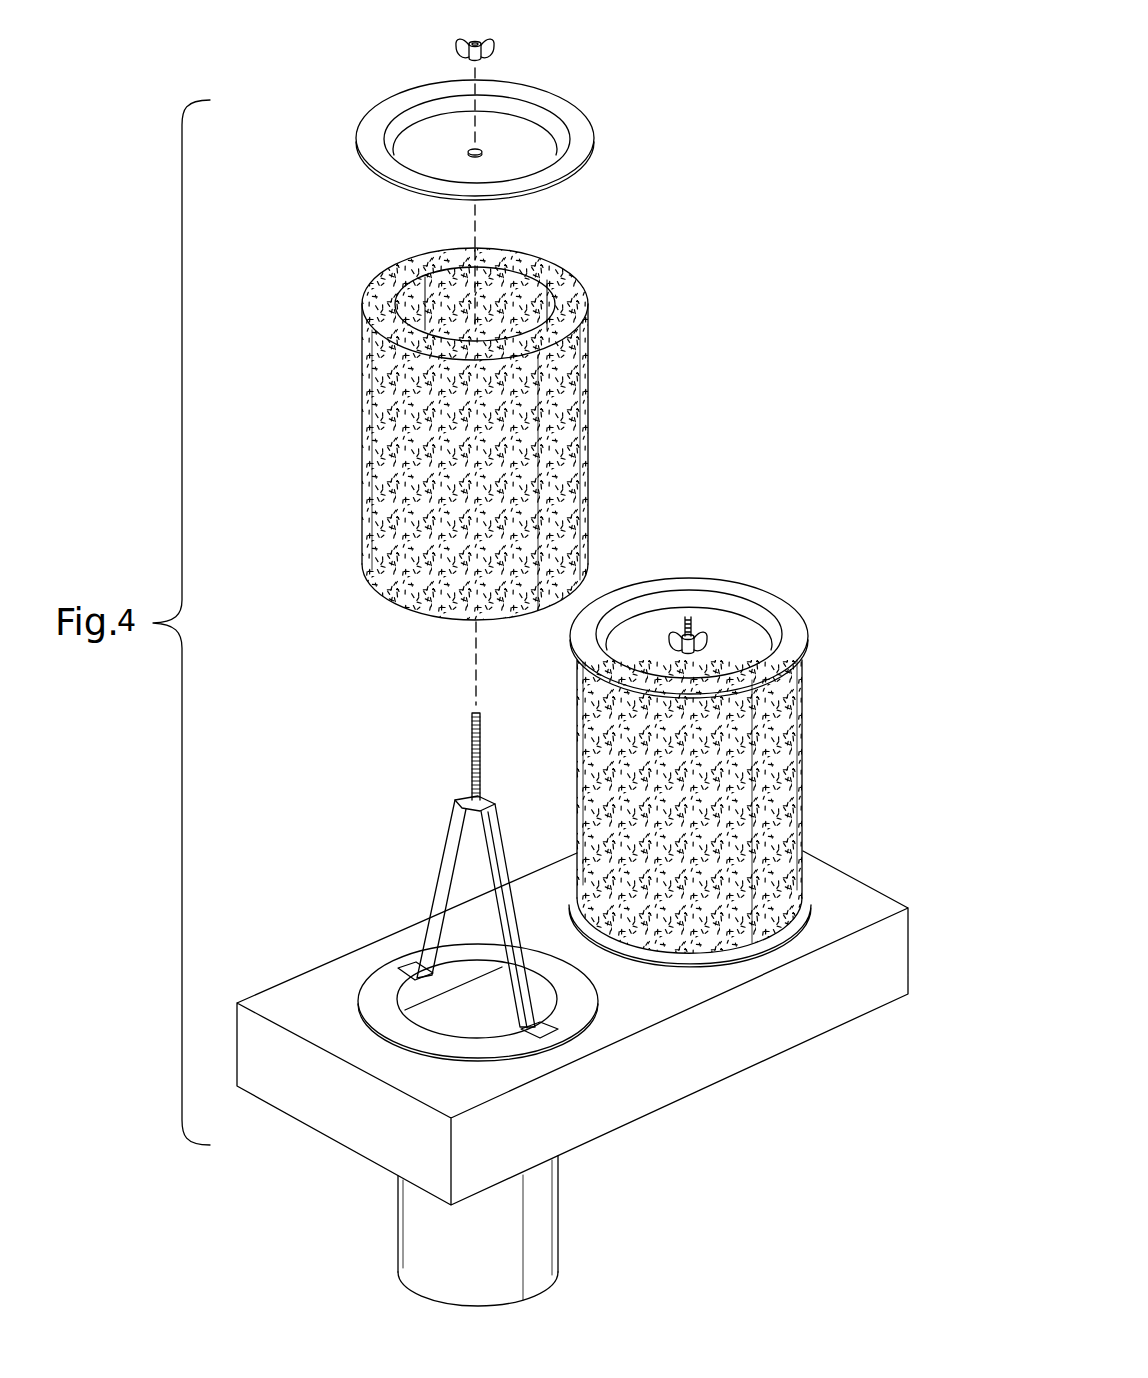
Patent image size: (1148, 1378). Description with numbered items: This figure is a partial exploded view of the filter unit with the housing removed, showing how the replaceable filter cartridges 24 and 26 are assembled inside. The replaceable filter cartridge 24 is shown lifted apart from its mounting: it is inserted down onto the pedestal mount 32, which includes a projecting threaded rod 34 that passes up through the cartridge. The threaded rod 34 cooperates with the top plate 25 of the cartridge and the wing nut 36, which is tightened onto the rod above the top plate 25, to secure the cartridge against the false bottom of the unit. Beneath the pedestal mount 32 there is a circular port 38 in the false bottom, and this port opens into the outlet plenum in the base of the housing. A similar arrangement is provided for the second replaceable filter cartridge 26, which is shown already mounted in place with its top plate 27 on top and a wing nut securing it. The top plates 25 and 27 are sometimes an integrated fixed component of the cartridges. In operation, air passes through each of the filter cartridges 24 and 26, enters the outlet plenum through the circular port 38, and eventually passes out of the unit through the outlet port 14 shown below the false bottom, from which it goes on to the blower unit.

The outlet port 14 is at (533, 1230).
The replaceable filter cartridge 24 is at (573, 417).
The top plate 25 is at (525, 143).
The replaceable filter cartridge 26 is at (787, 748).
The top plate 27 is at (737, 612).
The pedestal mount 32 is at (444, 884).
The threaded rod 34 is at (480, 752).
The wing nut 36 is at (487, 50).
The circular port 38 is at (463, 1005).